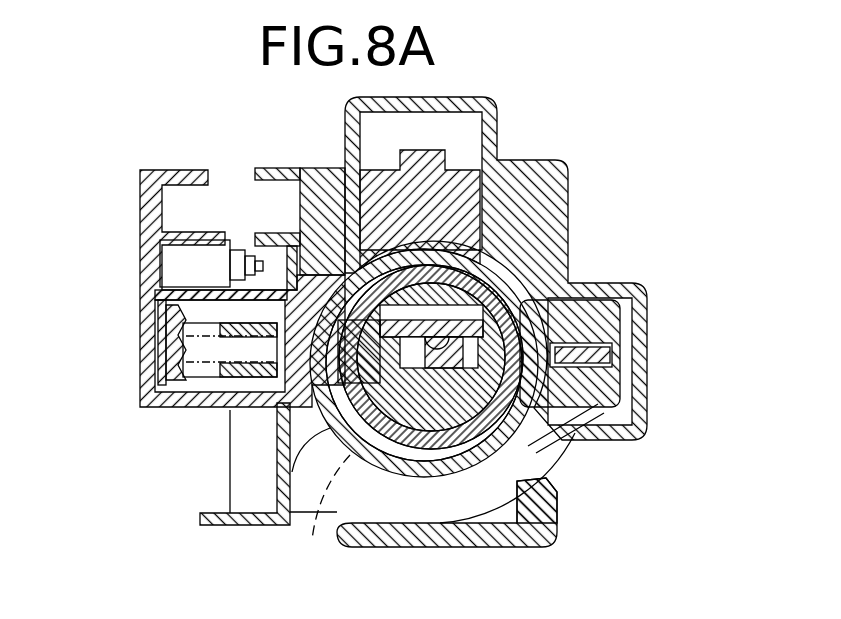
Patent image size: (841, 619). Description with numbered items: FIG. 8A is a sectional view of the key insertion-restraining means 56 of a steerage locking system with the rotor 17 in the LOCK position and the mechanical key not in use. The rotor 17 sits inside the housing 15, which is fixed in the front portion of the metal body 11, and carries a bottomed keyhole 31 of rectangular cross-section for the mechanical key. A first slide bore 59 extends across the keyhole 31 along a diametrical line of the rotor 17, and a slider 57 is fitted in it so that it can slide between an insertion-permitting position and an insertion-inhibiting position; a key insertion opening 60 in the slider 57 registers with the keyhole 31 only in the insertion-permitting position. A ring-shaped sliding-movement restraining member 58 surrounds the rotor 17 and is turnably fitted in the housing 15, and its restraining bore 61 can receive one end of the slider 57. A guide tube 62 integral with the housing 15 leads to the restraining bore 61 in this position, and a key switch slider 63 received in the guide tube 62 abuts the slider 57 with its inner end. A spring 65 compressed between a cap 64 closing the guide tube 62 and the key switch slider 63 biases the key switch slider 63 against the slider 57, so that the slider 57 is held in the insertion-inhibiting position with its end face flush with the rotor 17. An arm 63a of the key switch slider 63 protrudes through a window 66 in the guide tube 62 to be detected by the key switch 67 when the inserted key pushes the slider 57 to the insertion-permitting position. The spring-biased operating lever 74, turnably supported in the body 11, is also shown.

The body 11 is at (537, 175).
The housing 15 is at (493, 280).
The rotor 17 is at (418, 345).
The keyhole 31 is at (335, 447).
The key insertion-restraining means 56 is at (323, 433).
The slider 57 is at (348, 245).
The sliding-movement restraining member 58 is at (553, 472).
The first slide bore 59 is at (476, 255).
The key insertion opening 60 is at (500, 293).
The restraining bore 61 is at (345, 250).
The guide tube 62 is at (232, 383).
The key switch slider 63 is at (277, 410).
The arm 63a is at (290, 238).
The cap 64 is at (167, 333).
The spring 65 is at (170, 378).
The window 66 is at (158, 301).
The key switch 67 is at (192, 265).
The operating lever 74 is at (596, 357).